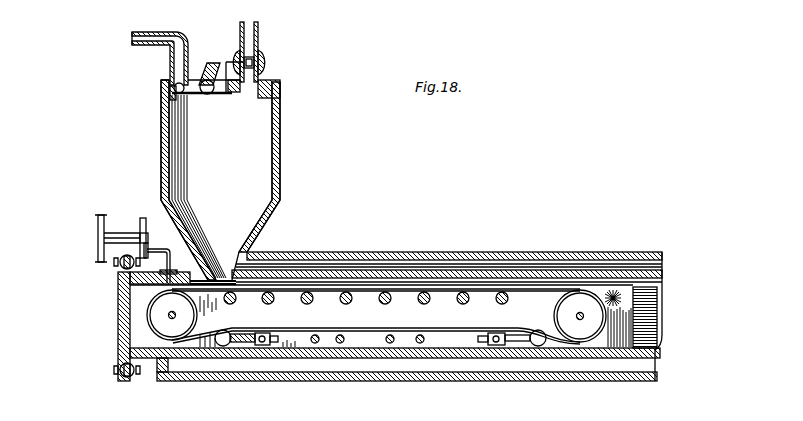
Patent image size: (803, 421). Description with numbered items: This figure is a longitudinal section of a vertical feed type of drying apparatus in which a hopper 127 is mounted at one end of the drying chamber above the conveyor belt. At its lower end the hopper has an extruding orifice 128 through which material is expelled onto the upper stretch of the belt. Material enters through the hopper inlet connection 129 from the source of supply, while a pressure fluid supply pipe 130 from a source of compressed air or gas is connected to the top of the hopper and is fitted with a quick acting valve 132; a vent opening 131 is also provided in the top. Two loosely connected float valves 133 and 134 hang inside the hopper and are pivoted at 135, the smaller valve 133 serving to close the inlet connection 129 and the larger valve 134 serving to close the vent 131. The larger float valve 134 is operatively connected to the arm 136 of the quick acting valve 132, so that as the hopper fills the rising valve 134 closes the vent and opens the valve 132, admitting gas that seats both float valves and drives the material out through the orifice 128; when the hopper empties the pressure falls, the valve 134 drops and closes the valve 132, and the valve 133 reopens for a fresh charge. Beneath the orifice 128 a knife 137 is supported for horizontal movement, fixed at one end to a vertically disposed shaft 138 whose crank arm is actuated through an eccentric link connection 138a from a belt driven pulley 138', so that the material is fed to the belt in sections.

The hopper 127 is at (283, 152).
The extruding orifice 128 is at (252, 256).
The hopper inlet connection 129 is at (171, 58).
The pressure fluid supply pipe 130 is at (262, 43).
The vent opening 131 is at (202, 66).
The quick acting valve 132 is at (261, 62).
The float valve 133 is at (170, 97).
The float valve 134 is at (210, 94).
The pivot 135 is at (175, 95).
The valve link 136 is at (242, 78).
The knife 137 is at (200, 267).
The vertically disposed shaft 138 is at (150, 233).
The eccentric link connection 138a is at (98, 237).
The belt driven pulley 138' is at (82, 262).